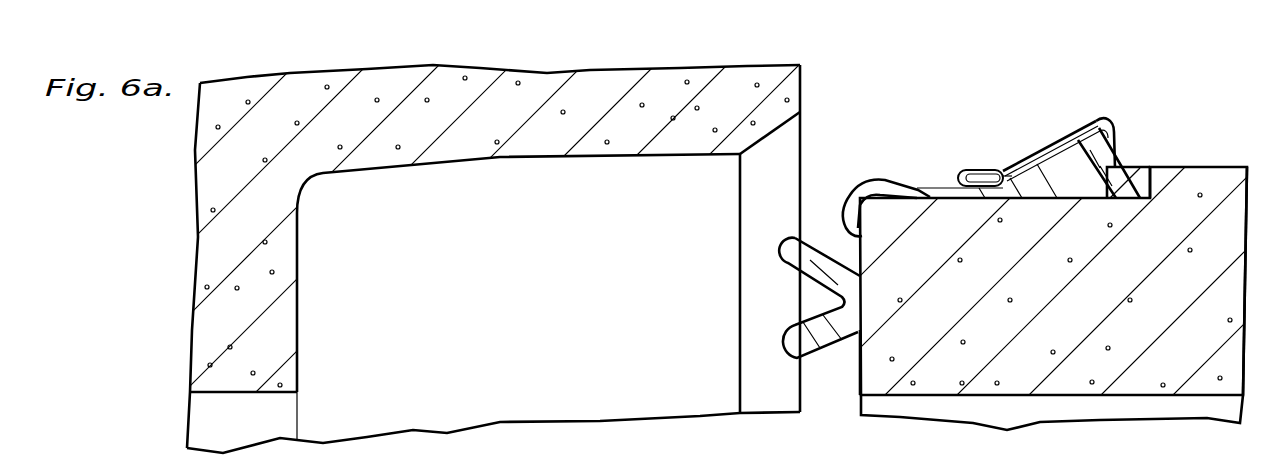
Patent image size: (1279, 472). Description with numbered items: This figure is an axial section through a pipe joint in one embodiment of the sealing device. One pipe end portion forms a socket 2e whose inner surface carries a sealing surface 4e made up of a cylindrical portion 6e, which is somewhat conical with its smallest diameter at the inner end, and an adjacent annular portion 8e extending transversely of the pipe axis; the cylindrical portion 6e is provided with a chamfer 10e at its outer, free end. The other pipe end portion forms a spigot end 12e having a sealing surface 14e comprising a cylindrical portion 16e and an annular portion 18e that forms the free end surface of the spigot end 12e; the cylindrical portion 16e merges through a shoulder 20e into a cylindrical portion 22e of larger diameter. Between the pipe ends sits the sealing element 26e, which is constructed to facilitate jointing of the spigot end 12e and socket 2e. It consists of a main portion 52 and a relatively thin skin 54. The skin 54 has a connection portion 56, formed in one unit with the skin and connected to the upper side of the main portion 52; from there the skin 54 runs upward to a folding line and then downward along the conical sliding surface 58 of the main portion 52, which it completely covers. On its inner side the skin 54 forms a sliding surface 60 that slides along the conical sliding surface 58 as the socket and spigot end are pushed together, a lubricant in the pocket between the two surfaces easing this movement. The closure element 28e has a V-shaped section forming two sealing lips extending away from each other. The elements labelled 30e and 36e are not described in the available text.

The socket 2e is at (525, 96).
The sealing surface 4e is at (298, 257).
The cylindrical portion 6e is at (530, 160).
The annular portion 8e is at (295, 375).
The chamfer 10e is at (790, 122).
The spigot end 12e is at (1200, 177).
The sealing surface 14e is at (838, 198).
The cylindrical portion 16e is at (1120, 172).
The annular portion 18e is at (858, 376).
The shoulder 20e is at (1152, 168).
The cylindrical portion 22e is at (1238, 163).
The sealing element 26e is at (1062, 150).
The closure element 28e is at (797, 264).
The clip plate 30e is at (930, 184).
The retaining block 36e is at (1138, 168).
The main portion 52 is at (1077, 140).
The skin 54 is at (1022, 146).
The connection portion 56 is at (983, 174).
The conical sliding surface 58 is at (1030, 156).
The sliding surface 60 is at (1097, 118).